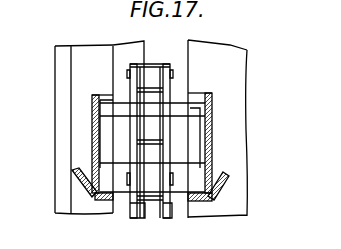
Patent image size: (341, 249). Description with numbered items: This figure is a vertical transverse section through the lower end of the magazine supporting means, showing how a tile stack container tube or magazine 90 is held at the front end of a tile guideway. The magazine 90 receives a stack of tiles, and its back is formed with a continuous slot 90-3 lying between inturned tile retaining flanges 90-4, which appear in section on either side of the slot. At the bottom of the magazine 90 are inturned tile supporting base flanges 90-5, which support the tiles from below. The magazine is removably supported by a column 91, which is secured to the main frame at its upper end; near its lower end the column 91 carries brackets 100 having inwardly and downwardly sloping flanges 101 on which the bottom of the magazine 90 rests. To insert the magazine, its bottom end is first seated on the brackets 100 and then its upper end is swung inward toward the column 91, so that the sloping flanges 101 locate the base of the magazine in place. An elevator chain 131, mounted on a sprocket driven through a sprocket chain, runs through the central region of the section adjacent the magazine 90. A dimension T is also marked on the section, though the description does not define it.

The column 91 is at (55, 97).
The magazine 90 is at (212, 128).
The continuous slot 90-3 is at (187, 100).
The inturned tile retaining flanges 90-4 is at (103, 95).
The inturned tile supporting base flanges 90-5 is at (107, 201).
The inwardly and downwardly sloping flanges 101 is at (72, 182).
The brackets 100 is at (105, 202).
The elevator chain 131 is at (147, 72).
The thickness T is at (185, 158).